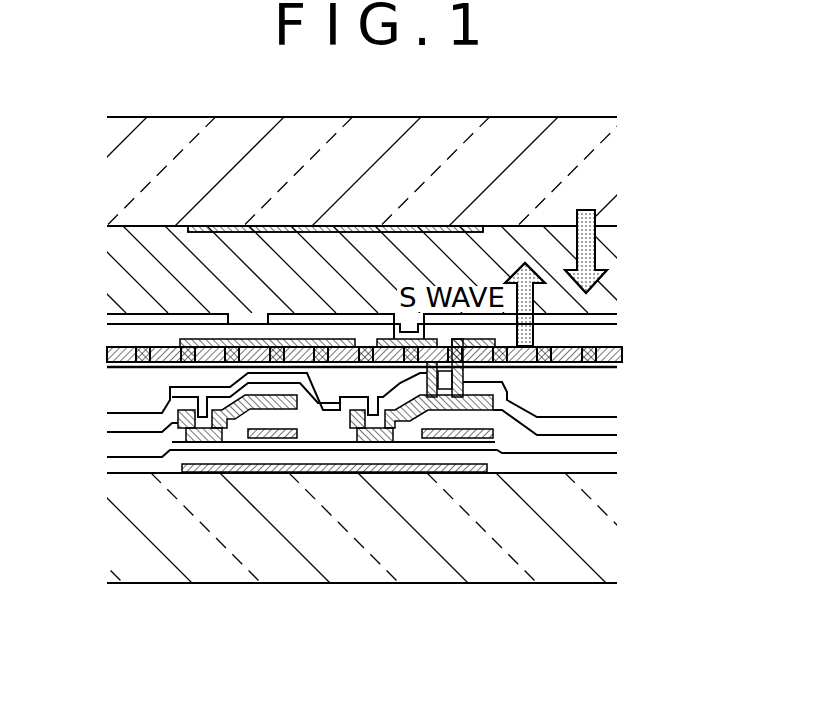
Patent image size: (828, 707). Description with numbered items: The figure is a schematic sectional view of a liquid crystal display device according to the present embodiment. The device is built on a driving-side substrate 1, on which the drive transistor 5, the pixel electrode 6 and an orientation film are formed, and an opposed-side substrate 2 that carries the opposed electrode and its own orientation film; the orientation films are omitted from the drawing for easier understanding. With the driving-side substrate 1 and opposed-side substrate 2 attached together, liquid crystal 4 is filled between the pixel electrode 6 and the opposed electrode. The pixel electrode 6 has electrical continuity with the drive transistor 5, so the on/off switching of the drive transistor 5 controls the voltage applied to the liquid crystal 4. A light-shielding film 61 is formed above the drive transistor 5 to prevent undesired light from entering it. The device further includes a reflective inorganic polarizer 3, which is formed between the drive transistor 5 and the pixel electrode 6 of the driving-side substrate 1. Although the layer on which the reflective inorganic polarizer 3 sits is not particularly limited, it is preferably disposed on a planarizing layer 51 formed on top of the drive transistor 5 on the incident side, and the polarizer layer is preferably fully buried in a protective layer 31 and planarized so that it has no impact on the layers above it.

The driving-side substrate 1 is at (92, 316).
The opposed-side substrate 2 is at (92, 117).
The reflective inorganic polarizer 3 is at (622, 353).
The liquid crystal 4 is at (92, 233).
The drive transistor 5 is at (324, 456).
The pixel electrode 6 is at (600, 315).
The protective layer 31 is at (588, 341).
The planarizing layer 51 is at (603, 395).
The light-shielding film 61 is at (210, 352).